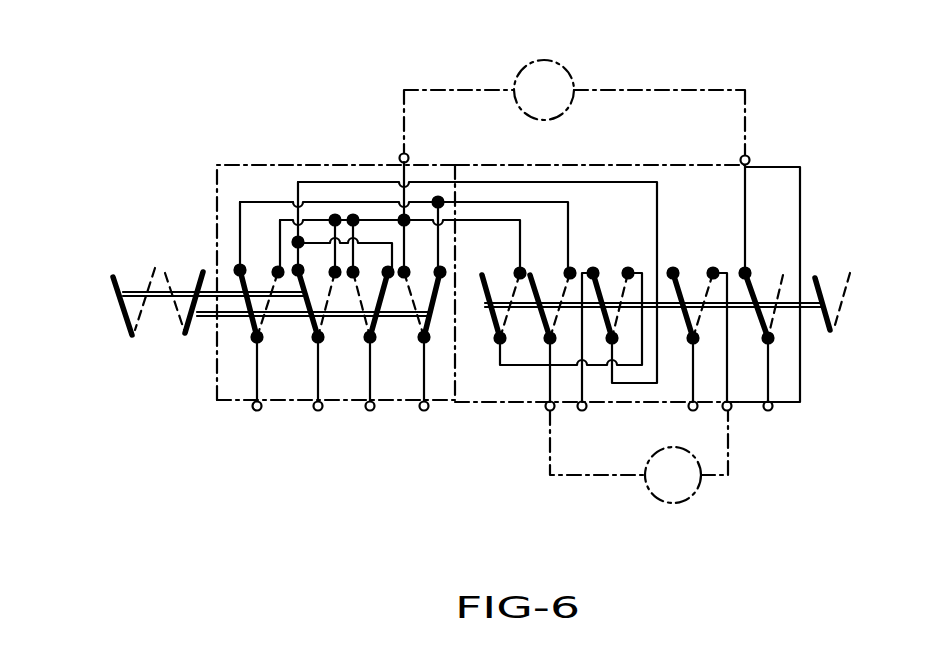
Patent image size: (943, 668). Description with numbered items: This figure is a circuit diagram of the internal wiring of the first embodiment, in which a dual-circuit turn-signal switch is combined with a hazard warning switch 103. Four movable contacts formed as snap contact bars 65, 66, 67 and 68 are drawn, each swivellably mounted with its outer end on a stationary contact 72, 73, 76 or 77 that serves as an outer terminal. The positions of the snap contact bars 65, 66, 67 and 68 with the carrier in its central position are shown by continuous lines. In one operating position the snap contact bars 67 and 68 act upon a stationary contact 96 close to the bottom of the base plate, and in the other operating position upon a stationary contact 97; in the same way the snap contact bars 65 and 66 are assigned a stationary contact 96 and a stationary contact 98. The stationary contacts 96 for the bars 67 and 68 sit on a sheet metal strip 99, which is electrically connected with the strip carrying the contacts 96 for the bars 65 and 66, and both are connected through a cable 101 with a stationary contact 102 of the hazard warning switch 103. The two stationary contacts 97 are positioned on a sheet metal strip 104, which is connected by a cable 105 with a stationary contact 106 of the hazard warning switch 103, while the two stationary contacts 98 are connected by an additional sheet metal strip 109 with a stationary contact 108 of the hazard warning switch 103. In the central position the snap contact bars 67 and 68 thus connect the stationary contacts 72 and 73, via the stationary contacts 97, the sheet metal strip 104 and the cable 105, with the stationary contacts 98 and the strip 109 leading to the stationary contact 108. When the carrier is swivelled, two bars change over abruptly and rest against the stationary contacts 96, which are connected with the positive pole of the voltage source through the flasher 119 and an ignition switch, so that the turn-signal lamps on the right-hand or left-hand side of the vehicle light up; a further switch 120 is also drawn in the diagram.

The snap contact bar 65 is at (309, 335).
The snap contact bar 66 is at (396, 332).
The snap contact bar 67 is at (252, 325).
The snap contact bar 68 is at (436, 334).
The stationary contact 72 is at (250, 345).
The stationary contact 73 is at (417, 336).
The stationary contact 76 is at (355, 334).
The stationary contact 77 is at (366, 332).
The stationary contact 96 is at (277, 270).
The stationary contact 97 is at (238, 268).
The stationary contact 98 is at (293, 248).
The sheet metal strip 99 is at (258, 201).
The cable 101 is at (478, 219).
The stationary contact 102 is at (523, 270).
The hazard warning switch 103 is at (528, 400).
The sheet metal strip 104 is at (237, 163).
The cable 105 is at (577, 181).
The stationary contact 106 is at (573, 268).
The stationary contact 108 is at (616, 345).
The sheet metal strip 109 is at (507, 181).
The flasher 119 is at (557, 65).
The switch 120 is at (750, 284).